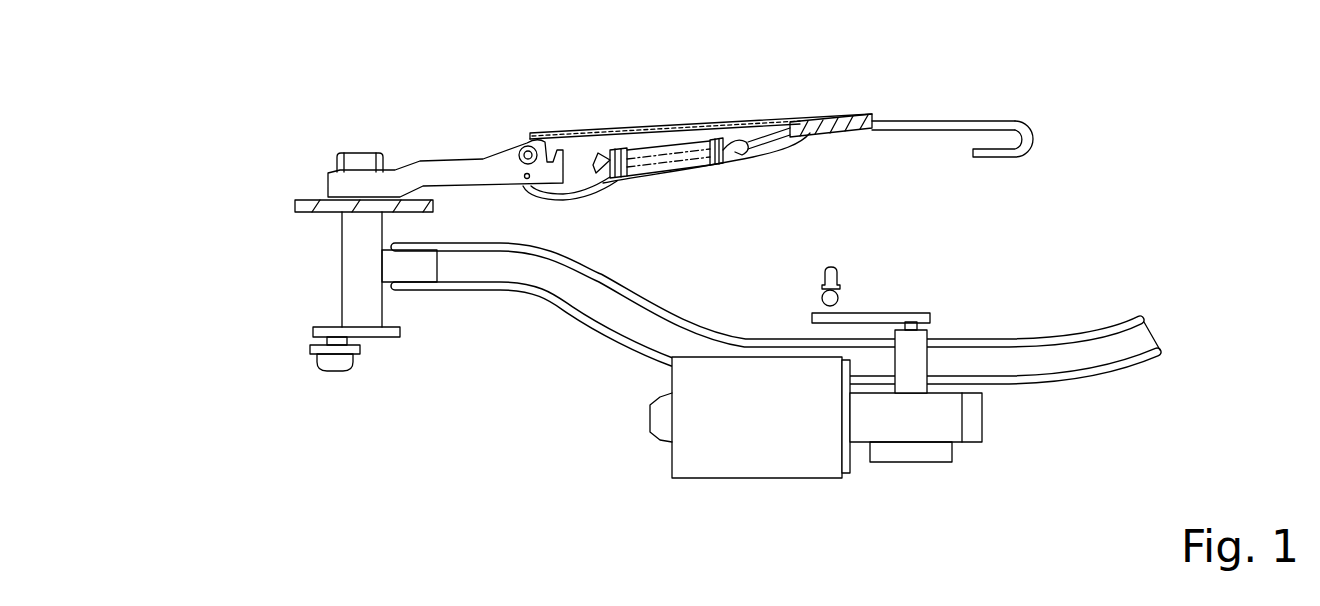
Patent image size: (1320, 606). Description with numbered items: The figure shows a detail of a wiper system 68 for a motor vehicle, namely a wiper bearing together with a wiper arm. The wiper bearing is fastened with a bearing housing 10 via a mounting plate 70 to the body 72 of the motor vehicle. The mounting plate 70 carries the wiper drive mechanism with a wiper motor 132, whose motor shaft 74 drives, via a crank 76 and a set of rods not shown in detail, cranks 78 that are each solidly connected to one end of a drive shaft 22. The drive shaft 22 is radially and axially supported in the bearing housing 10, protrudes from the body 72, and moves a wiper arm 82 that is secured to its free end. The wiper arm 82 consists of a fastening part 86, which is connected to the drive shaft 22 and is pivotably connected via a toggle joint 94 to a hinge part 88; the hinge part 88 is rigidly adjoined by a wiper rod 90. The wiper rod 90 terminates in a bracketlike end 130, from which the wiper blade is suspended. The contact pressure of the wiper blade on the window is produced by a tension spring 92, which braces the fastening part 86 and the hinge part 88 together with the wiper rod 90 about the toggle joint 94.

The bearing housing 10 is at (332, 287).
The drive shaft 22 is at (347, 193).
The wiper system 68 is at (992, 472).
The mounting plate 70 is at (1125, 307).
The body 72 is at (284, 207).
The motor shaft 74 is at (930, 327).
The crank 76 is at (882, 306).
The cranks 78 is at (397, 344).
The wiper arm 82 is at (644, 95).
The fastening part 86 is at (435, 155).
The hinge part 88 is at (766, 105).
The wiper rod 90 is at (948, 107).
The tension spring 92 is at (720, 166).
The toggle joint 94 is at (526, 146).
The bracketlike end 130 is at (987, 155).
The wiper motor 132 is at (754, 441).